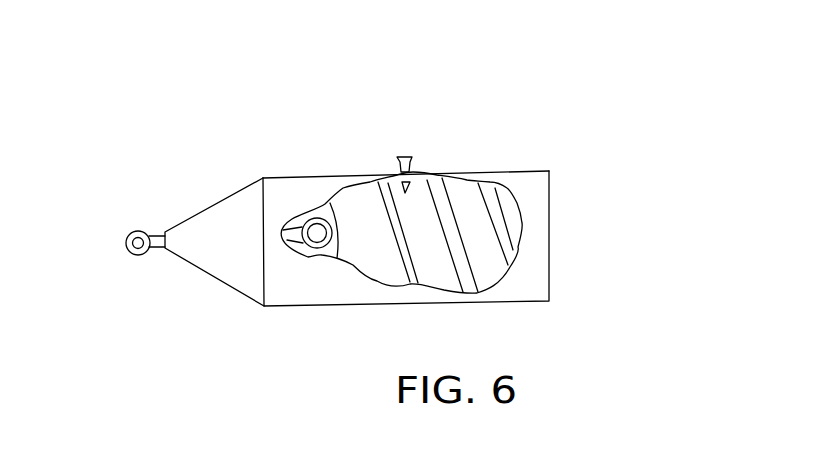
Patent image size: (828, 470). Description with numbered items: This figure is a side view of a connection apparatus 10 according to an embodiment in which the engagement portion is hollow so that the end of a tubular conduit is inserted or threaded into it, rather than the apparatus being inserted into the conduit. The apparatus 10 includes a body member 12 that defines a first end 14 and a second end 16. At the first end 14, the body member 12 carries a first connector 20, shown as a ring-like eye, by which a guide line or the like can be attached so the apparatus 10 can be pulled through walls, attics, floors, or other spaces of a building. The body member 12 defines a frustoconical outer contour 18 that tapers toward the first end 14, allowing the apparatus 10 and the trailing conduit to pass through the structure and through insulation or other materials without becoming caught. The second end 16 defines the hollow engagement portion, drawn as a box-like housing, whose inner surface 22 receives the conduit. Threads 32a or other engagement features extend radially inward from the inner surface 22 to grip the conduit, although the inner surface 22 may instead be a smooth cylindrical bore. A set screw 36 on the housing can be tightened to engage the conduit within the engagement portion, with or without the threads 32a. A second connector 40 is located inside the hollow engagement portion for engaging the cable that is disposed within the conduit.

The connection apparatus 10 is at (440, 85).
The body member 12 is at (308, 175).
The first end 14 is at (180, 210).
The second end 16 is at (517, 315).
The frustoconical outer contour 18 is at (217, 257).
The first connector 20 is at (136, 256).
The inner surface 22 is at (477, 233).
The threads 32a is at (492, 197).
The set screw 36 is at (408, 156).
The second connector 40 is at (322, 256).